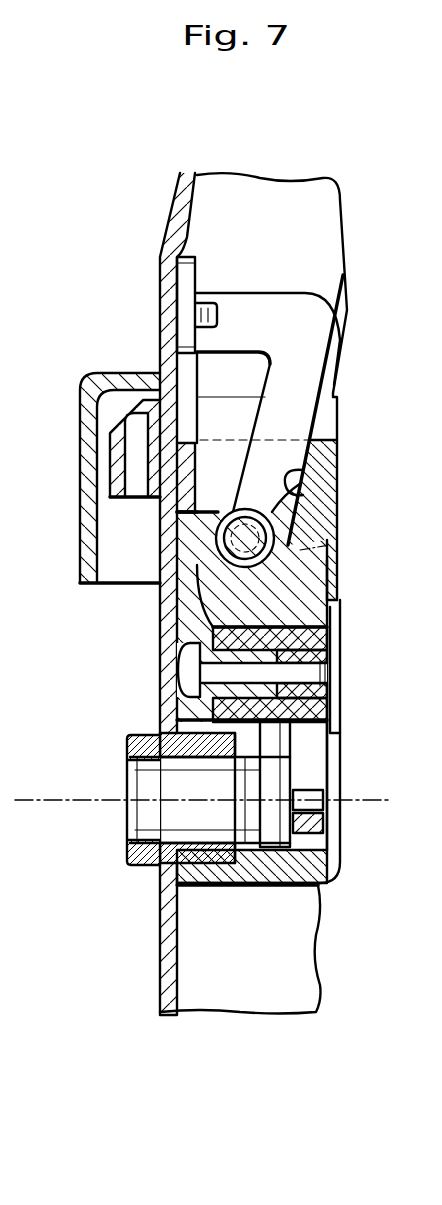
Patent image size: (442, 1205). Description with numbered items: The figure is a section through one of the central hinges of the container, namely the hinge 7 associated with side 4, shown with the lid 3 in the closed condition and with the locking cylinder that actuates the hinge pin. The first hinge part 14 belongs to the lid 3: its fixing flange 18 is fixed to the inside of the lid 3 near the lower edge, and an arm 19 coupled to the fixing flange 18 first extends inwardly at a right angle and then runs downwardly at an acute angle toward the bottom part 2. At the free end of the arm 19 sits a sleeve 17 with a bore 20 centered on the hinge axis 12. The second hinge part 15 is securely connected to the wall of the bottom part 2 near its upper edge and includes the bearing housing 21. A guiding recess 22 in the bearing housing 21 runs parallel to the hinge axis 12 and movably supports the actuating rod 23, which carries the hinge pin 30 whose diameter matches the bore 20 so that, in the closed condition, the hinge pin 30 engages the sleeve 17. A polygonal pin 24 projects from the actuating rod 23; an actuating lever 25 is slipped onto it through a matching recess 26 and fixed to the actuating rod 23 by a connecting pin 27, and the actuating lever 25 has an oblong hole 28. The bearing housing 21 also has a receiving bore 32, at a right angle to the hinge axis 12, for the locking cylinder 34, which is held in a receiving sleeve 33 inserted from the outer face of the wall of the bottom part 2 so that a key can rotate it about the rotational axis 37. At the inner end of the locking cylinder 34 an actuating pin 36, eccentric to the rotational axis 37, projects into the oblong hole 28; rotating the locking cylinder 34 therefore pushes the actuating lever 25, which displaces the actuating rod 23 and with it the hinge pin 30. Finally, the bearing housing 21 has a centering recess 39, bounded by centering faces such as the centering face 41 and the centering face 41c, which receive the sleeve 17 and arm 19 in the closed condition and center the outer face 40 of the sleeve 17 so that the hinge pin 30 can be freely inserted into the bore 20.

The bottom part 2 is at (167, 982).
The lid 3 is at (178, 190).
The side 4 is at (100, 620).
The hinge 7 is at (357, 347).
The hinge axis 12 is at (330, 545).
The first hinge part 14 is at (317, 313).
The second hinge part 15 is at (333, 603).
The sleeve 17 is at (320, 578).
The fixing flange 18 is at (185, 283).
The arm 19 is at (260, 313).
The bore 20 is at (232, 527).
The bearing housing 21 is at (303, 868).
The guiding recess 22 is at (195, 605).
The actuating rod 23 is at (178, 620).
The polygonal pin 24 is at (310, 658).
The actuating lever 25 is at (310, 822).
The recess 26 is at (318, 700).
The connecting pin 27 is at (190, 673).
The oblong hole 28 is at (313, 768).
The hinge pin 30 is at (305, 505).
The receiving bore 32 is at (140, 770).
The receiving sleeve 33 is at (133, 733).
The locking cylinder 34 is at (157, 785).
The actuating pin 36 is at (310, 793).
The rotational axis 37 is at (92, 803).
The centering recess 39 is at (313, 453).
The outer face 40 is at (330, 607).
The centering face 41 is at (340, 465).
The centering face 41c is at (218, 580).